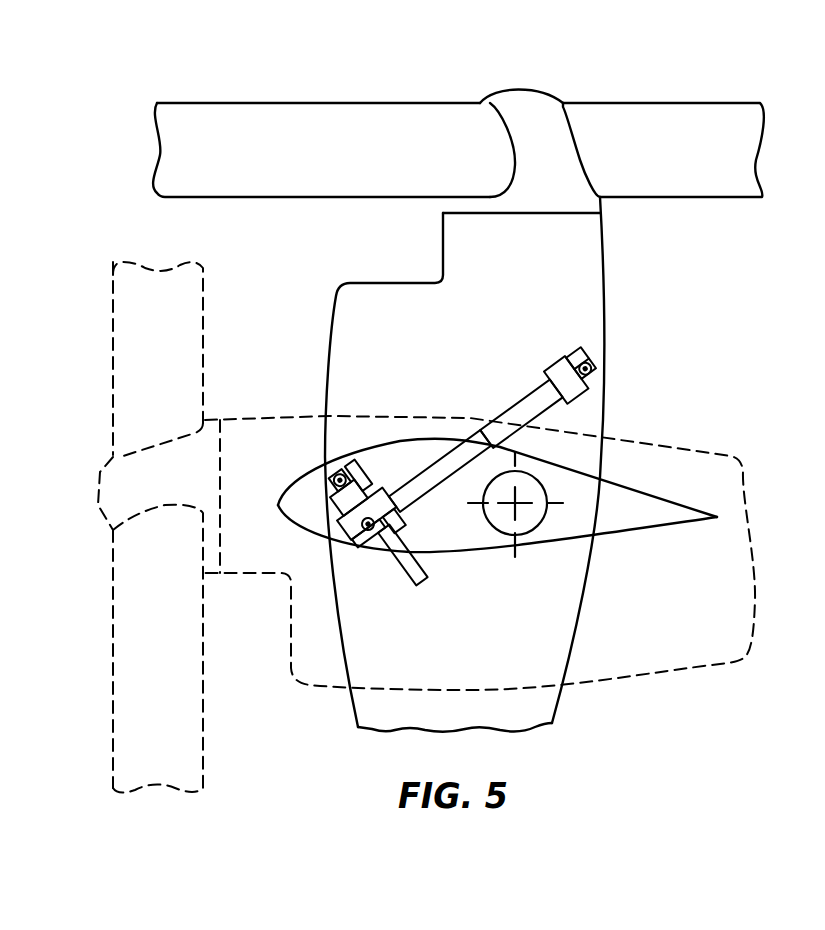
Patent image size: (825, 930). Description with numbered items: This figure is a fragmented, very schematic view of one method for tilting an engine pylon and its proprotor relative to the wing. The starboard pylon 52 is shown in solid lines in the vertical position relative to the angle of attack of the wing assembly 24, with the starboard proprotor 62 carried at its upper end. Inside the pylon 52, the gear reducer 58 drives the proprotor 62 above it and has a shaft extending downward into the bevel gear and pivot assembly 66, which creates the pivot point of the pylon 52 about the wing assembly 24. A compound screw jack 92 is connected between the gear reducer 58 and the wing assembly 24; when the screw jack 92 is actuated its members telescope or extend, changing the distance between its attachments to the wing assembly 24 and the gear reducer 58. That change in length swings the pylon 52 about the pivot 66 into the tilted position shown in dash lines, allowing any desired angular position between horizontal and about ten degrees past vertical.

The starboard proprotor 62 is at (650, 103).
The starboard pylon 52 is at (612, 323).
The gear reducer 58 is at (587, 403).
The compound screw jack 92 is at (440, 426).
The wing assembly 24 is at (674, 498).
The bevel gear and pivot assembly 66 is at (546, 523).